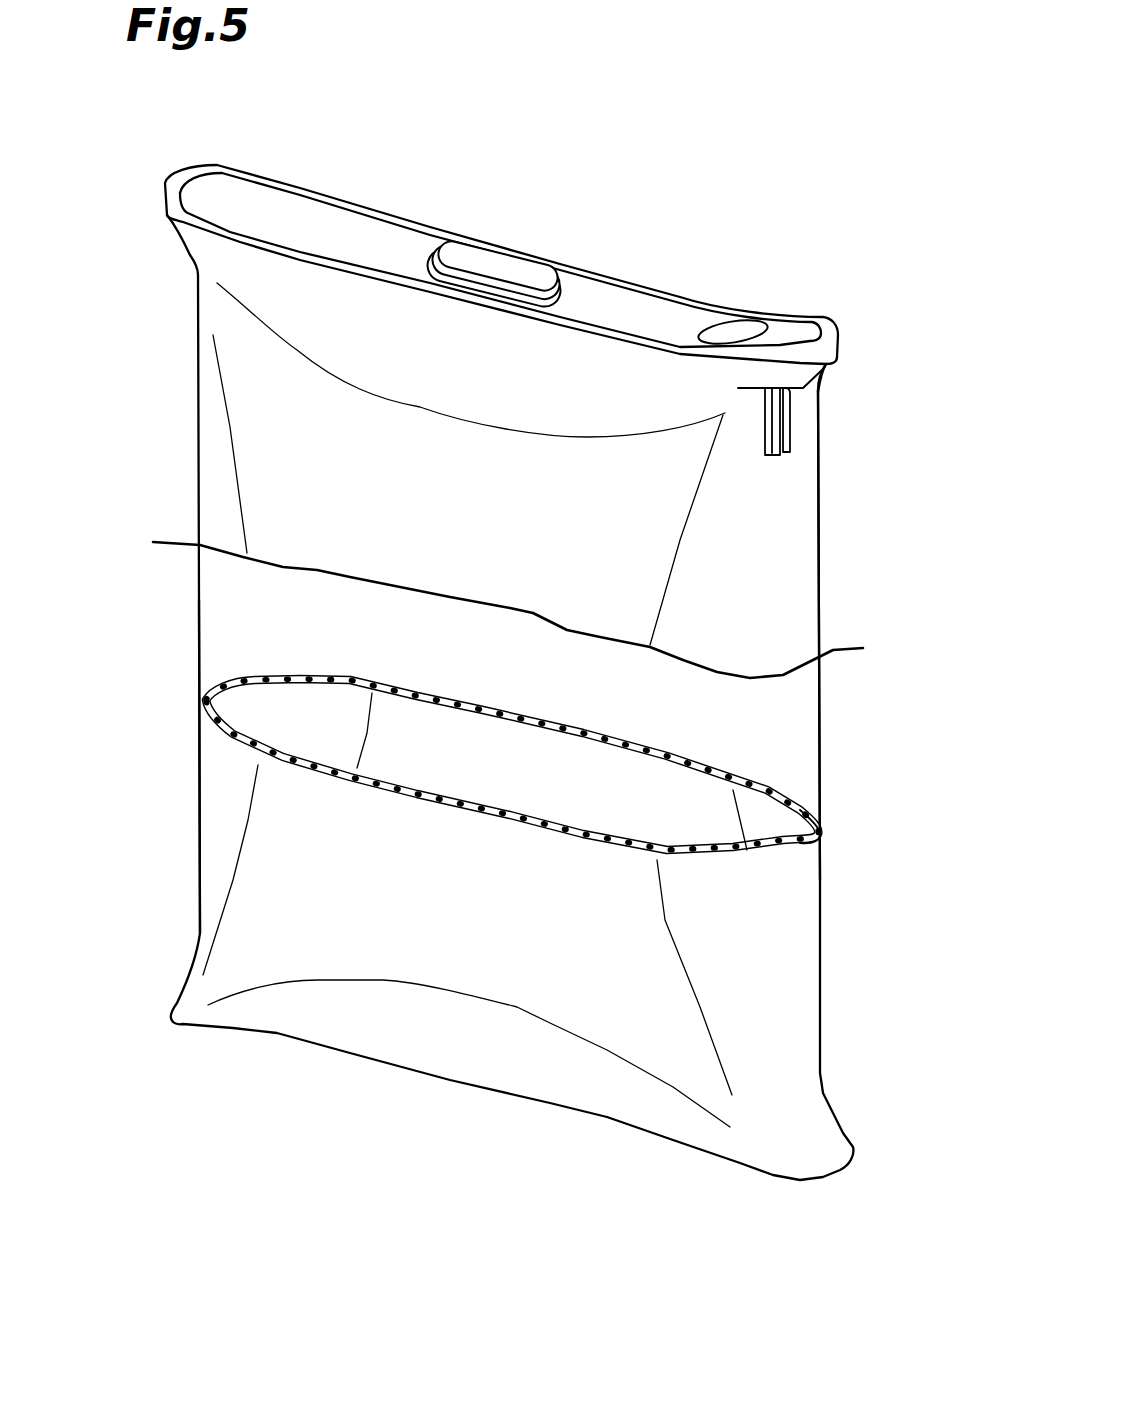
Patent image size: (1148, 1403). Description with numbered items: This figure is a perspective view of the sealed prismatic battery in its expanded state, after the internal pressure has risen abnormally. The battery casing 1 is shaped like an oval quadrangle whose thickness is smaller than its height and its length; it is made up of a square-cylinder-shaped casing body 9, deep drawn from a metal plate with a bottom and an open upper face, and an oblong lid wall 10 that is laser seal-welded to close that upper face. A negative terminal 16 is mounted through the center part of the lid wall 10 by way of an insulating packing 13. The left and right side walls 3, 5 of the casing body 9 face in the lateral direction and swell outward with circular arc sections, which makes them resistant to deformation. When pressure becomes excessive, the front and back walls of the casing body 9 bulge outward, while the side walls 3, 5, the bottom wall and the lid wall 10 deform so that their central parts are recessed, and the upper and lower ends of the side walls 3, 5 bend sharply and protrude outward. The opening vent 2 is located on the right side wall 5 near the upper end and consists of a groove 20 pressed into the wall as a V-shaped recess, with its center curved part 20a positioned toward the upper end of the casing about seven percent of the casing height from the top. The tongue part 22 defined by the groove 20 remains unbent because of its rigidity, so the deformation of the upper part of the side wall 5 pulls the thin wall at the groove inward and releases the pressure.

The battery casing 1 is at (183, 392).
The opening vent 2 is at (748, 429).
The side wall 3 is at (200, 715).
The side wall 5 is at (808, 845).
The casing body 9 is at (418, 1033).
The lid wall 10 is at (377, 244).
The insulating packing 13 is at (568, 272).
The negative terminal 16 is at (500, 266).
The groove 20 is at (783, 468).
The center curved part 20a is at (815, 391).
The tongue part 22 is at (806, 401).